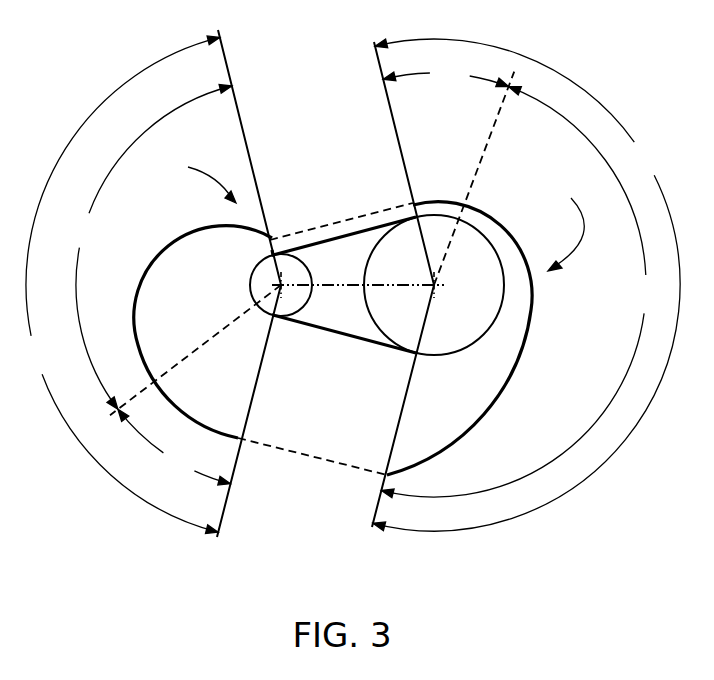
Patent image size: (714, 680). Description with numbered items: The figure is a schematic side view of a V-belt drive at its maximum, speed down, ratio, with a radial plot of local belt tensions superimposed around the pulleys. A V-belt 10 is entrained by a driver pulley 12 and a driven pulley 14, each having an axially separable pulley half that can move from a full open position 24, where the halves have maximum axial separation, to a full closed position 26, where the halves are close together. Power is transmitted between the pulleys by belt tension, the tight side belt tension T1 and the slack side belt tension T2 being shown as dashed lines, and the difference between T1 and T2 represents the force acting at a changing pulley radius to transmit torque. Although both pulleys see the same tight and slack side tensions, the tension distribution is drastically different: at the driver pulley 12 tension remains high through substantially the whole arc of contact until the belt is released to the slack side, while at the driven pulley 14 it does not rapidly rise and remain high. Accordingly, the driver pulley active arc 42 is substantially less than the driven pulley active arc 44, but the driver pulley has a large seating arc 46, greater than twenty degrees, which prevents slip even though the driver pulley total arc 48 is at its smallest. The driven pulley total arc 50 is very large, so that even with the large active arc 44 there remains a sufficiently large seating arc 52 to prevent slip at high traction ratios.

The V-belt 10 is at (367, 341).
The driver pulley 12 is at (287, 267).
The driven pulley 14 is at (405, 243).
The full open position 24 is at (194, 178).
The full closed position 26 is at (561, 229).
The driver pulley active arc 42 is at (151, 247).
The driven pulley active arc 44 is at (520, 292).
The driver pulley seating arc 46 is at (174, 447).
The driver pulley total arc 48 is at (123, 285).
The driven pulley total arc 50 is at (526, 285).
The driven pulley seating arc 52 is at (445, 72).
The tight side belt tension T1 is at (285, 452).
The slack side belt tension T2 is at (344, 216).